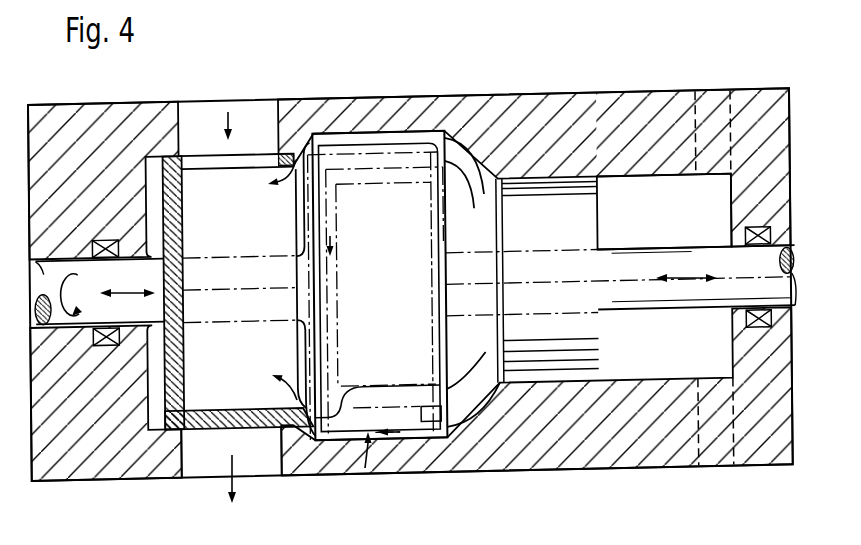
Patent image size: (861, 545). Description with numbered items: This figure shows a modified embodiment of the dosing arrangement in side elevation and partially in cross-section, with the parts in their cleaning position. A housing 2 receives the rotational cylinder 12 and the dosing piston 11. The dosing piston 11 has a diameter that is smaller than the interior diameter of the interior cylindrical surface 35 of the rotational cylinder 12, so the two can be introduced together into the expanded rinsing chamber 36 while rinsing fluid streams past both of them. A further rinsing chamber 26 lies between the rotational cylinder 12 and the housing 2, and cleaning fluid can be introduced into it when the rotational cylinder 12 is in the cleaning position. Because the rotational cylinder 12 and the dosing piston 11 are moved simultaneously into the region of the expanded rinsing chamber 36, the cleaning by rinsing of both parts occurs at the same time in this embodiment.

The housing 2 is at (585, 107).
The dosing piston 11 is at (405, 197).
The rotational cylinder 12 is at (215, 432).
The rinsing chamber 26 is at (153, 167).
The interior cylindrical surface 35 is at (236, 410).
The rinsing chamber 36 is at (370, 137).